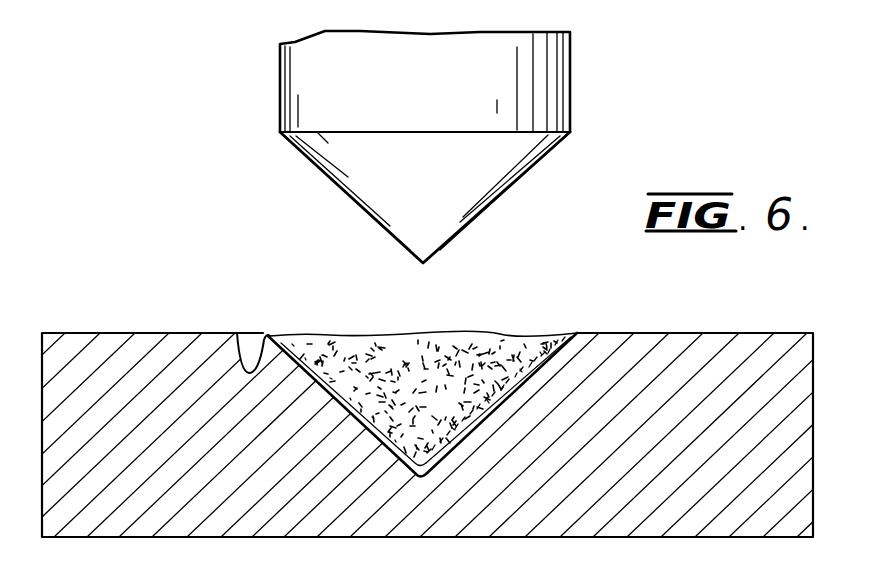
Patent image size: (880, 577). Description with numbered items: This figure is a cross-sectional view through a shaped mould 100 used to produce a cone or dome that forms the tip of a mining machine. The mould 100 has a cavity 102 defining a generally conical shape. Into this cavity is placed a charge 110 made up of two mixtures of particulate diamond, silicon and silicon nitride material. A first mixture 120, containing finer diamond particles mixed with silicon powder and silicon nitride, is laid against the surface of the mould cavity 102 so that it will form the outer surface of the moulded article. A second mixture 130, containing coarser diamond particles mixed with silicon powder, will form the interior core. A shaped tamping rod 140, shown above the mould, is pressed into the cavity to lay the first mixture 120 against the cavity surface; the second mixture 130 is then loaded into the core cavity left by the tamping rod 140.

The mould 100 is at (140, 365).
The cavity 102 is at (244, 372).
The charge 110 is at (437, 327).
The first mixture 120 is at (287, 343).
The second mixture 130 is at (517, 340).
The shaped tamping rod 140 is at (310, 70).